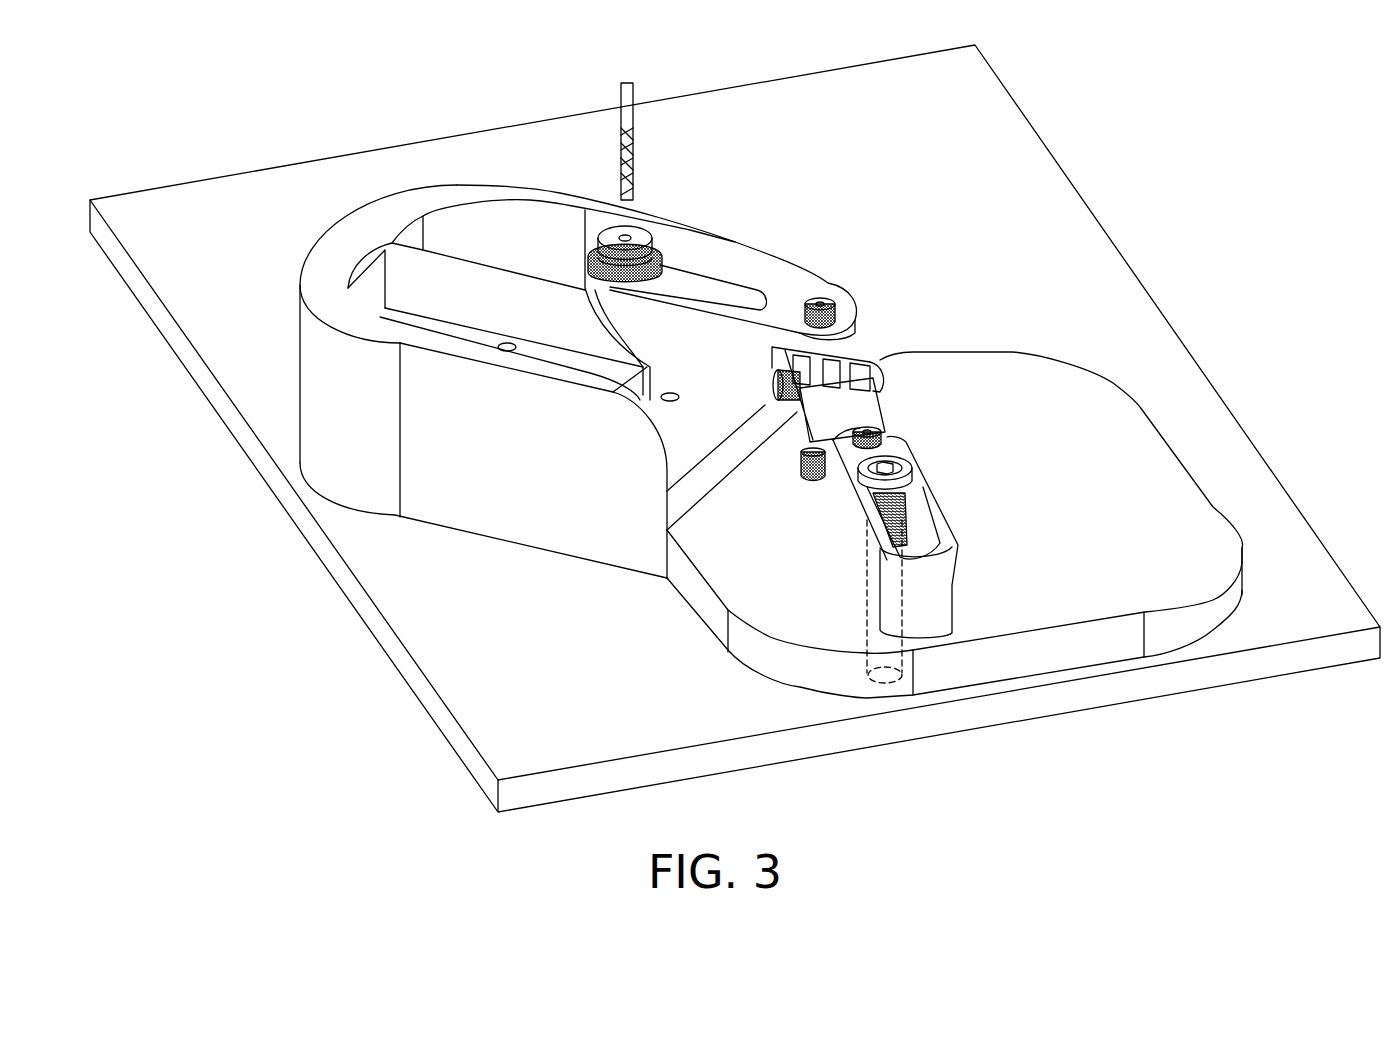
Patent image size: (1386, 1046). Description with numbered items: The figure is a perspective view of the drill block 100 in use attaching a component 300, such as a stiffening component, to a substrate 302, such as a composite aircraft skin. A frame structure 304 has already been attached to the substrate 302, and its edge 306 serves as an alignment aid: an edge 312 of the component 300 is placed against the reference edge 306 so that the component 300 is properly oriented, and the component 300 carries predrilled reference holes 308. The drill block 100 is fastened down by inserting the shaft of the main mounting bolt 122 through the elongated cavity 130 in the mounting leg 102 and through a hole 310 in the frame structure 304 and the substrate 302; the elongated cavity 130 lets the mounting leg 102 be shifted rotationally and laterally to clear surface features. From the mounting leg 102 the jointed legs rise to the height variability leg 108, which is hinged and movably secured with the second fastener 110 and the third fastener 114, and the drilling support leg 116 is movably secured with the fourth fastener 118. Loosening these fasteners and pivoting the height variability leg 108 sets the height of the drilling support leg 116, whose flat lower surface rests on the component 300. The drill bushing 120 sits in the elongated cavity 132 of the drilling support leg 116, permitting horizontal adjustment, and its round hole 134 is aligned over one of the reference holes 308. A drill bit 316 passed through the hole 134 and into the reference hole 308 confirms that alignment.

The drill block 100 is at (905, 288).
The mounting leg 102 is at (942, 577).
The height variability leg 108 is at (825, 420).
The second fastener 110 is at (803, 463).
The third fastener 114 is at (880, 360).
The drilling support leg 116 is at (692, 362).
The fourth fastener 118 is at (823, 298).
The drill bushing 120 is at (642, 235).
The main mounting bolt 122 is at (913, 472).
The elongated cavity 130 is at (920, 526).
The elongated cavity 132 is at (724, 290).
The round hole 134 is at (622, 232).
The component 300 is at (507, 476).
The substrate 302 is at (912, 147).
The frame structure 304 is at (1093, 536).
The edge 306 is at (660, 548).
The reference holes 308 is at (503, 352).
The hole 310 is at (867, 630).
The edge 312 is at (692, 495).
The drill bit 316 is at (628, 93).